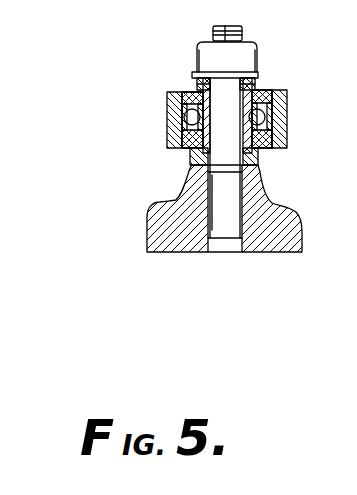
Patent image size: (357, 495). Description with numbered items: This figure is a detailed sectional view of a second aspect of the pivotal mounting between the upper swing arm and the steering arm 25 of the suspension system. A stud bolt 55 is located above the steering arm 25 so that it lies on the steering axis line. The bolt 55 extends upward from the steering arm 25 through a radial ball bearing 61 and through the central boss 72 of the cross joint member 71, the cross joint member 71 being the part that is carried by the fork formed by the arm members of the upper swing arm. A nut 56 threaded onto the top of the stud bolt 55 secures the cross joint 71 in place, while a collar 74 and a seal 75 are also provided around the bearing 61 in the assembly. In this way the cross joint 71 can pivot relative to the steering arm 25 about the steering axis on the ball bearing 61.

The steering arm 25 is at (148, 212).
The stud bolt 55 is at (259, 78).
The nut 56 is at (206, 44).
The radial ball bearing 61 is at (263, 118).
The cross joint member 71 is at (163, 104).
The central boss 72 is at (280, 136).
The collar 74 is at (200, 85).
The seal 75 is at (278, 92).